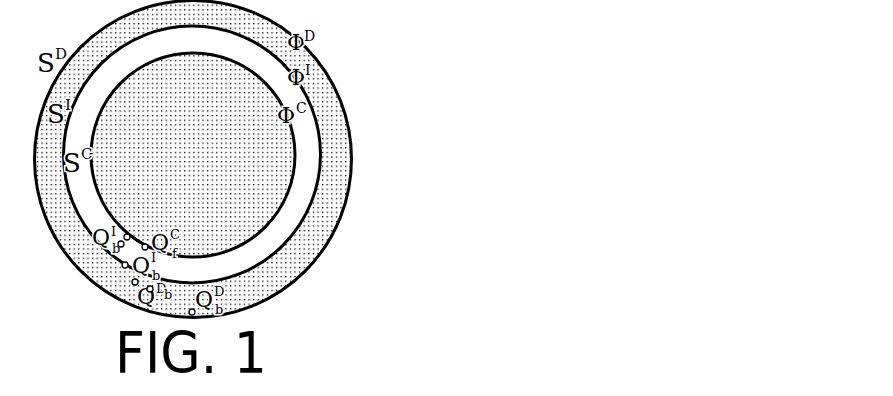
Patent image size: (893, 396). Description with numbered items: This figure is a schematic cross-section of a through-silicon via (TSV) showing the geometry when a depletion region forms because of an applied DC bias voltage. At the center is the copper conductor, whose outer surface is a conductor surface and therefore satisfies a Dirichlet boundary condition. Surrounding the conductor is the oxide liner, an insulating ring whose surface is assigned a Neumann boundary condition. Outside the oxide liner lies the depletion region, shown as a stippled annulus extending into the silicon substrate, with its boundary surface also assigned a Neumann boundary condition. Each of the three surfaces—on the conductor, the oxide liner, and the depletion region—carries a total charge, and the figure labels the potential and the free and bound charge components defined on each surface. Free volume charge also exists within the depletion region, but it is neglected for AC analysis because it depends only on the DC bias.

The element depletion region is at (317, 235).
The element oxide liner is at (298, 195).
The copper conductor is at (193, 155).